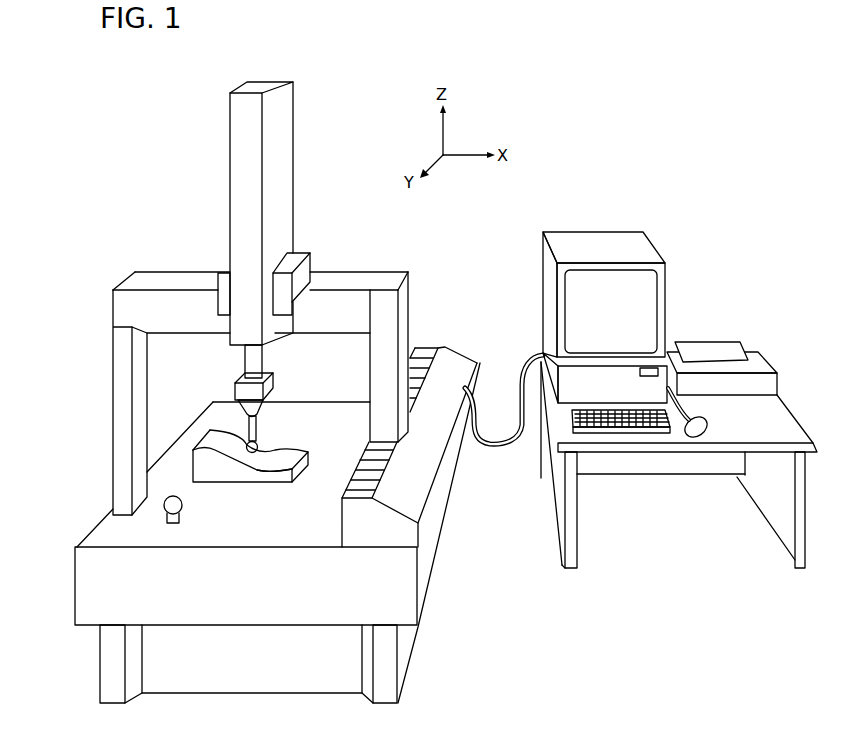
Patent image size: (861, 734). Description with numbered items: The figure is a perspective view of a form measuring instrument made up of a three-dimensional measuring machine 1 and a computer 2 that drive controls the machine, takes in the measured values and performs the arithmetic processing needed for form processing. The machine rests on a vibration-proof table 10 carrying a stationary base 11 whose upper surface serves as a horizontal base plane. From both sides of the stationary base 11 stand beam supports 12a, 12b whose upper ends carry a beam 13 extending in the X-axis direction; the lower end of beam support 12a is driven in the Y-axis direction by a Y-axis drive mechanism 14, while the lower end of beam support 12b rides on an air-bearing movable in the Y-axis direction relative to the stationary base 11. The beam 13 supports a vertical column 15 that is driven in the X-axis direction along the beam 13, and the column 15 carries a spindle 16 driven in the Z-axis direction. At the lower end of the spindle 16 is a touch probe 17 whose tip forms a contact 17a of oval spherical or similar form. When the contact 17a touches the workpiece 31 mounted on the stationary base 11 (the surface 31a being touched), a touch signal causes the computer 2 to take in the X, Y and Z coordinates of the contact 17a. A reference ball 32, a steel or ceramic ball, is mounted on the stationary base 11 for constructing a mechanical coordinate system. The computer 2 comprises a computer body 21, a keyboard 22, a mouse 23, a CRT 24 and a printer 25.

The three-dimensional measuring machine 1 is at (328, 147).
The computer 2 is at (724, 252).
The vibration-proof table 10 is at (108, 672).
The stationary base 11 is at (83, 587).
The beam support 12a is at (406, 299).
The beam support 12b is at (122, 392).
The beam 13 is at (165, 282).
The Y-axis drive mechanism 14 is at (456, 359).
The column 15 is at (238, 160).
The spindle 16 is at (263, 355).
The touch probe 17 is at (262, 438).
The contact 17a is at (262, 441).
The computer body 21 is at (545, 356).
The keyboard 22 is at (633, 426).
The mouse 23 is at (707, 438).
The CRT 24 is at (600, 240).
The printer 25 is at (760, 363).
The workpiece 31 is at (311, 455).
The measured surface of workpiece 31a is at (284, 470).
The reference ball 32 is at (183, 505).